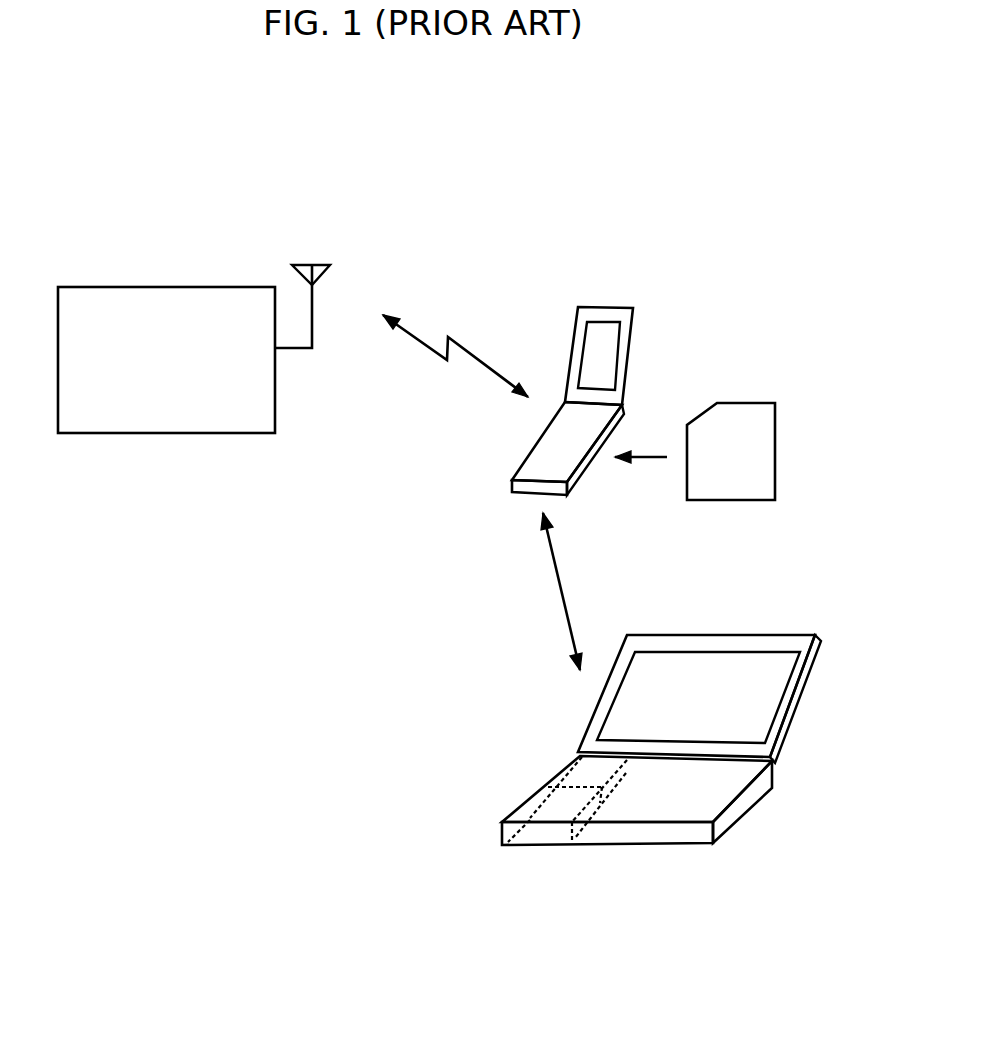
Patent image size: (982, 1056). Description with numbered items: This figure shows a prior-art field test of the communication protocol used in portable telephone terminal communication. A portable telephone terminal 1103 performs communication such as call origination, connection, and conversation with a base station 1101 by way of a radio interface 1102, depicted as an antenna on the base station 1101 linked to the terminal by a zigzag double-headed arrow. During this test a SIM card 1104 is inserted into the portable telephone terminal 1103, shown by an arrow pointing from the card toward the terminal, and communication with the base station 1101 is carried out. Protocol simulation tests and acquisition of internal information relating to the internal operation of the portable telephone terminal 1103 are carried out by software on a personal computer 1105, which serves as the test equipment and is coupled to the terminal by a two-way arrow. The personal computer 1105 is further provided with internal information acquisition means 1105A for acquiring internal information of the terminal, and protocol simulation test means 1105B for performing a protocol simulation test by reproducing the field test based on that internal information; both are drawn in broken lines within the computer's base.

The base station 1101 is at (165, 285).
The radio interface 1102 is at (312, 263).
The portable telephone terminal 1103 is at (545, 432).
The SIM card 1104 is at (740, 403).
The personal computer 1105 is at (740, 822).
The internal information acquisition means 1105A is at (565, 772).
The protocol simulation test means 1105B is at (525, 810).